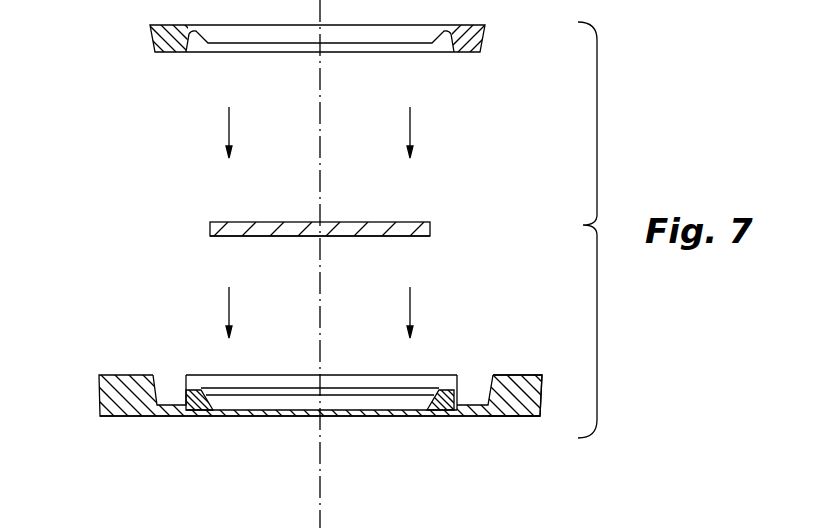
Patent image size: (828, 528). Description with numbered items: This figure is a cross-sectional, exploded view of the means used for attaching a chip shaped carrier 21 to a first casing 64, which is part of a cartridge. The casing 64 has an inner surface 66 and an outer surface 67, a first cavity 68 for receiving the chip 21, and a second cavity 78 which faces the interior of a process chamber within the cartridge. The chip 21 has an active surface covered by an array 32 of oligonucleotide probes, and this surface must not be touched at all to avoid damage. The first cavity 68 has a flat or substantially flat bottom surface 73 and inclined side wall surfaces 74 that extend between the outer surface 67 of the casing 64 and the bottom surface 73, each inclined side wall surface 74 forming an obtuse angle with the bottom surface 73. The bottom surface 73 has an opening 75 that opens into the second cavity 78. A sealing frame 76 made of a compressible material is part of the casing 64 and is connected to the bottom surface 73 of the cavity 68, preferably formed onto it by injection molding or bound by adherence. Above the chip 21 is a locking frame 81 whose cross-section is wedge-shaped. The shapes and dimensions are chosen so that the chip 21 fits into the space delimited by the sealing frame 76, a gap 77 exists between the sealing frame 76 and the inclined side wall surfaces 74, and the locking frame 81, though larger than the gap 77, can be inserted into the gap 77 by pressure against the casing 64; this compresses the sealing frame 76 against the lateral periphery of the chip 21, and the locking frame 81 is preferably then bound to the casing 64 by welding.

The locking frame 81 is at (484, 50).
The chip shaped carrier 21 is at (430, 226).
The array of oligonucleotide probes 32 is at (250, 237).
The first casing 64 is at (99, 395).
The inner surface 66 is at (508, 418).
The outer surface 67 is at (515, 378).
The first cavity 68 is at (282, 398).
The bottom surface 73 is at (458, 398).
The inclined side wall surfaces 74 is at (484, 385).
The opening 75 is at (407, 417).
The sealing frame 76 is at (195, 400).
The gap 77 is at (172, 395).
The second cavity 78 is at (253, 417).